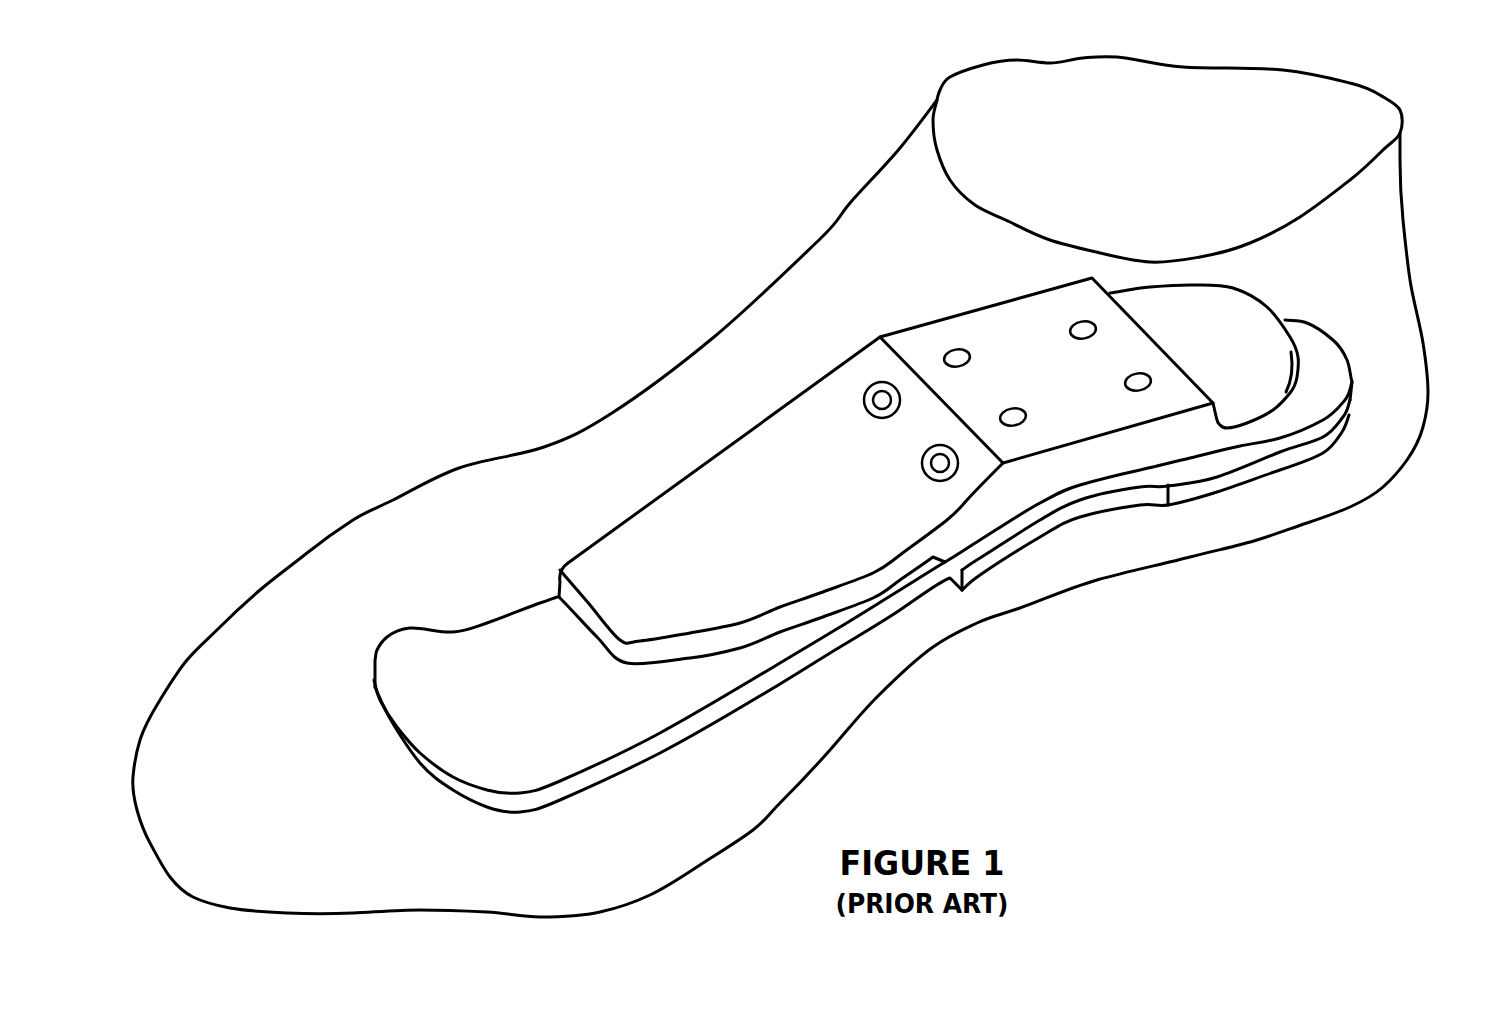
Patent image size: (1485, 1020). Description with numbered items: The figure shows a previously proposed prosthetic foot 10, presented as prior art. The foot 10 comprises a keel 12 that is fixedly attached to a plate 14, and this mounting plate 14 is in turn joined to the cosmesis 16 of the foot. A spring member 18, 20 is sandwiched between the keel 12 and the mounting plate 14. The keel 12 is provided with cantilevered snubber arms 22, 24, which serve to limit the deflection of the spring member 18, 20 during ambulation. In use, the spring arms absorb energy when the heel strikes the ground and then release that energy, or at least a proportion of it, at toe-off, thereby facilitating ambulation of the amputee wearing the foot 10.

The foot 10 is at (1420, 303).
The keel 12 is at (945, 337).
The plate 14 is at (1042, 532).
The cosmesis 16 is at (935, 635).
The spring member 18 is at (408, 647).
The spring member 20 is at (1330, 367).
The snubber arm 22 is at (678, 513).
The snubber arm 24 is at (1230, 307).